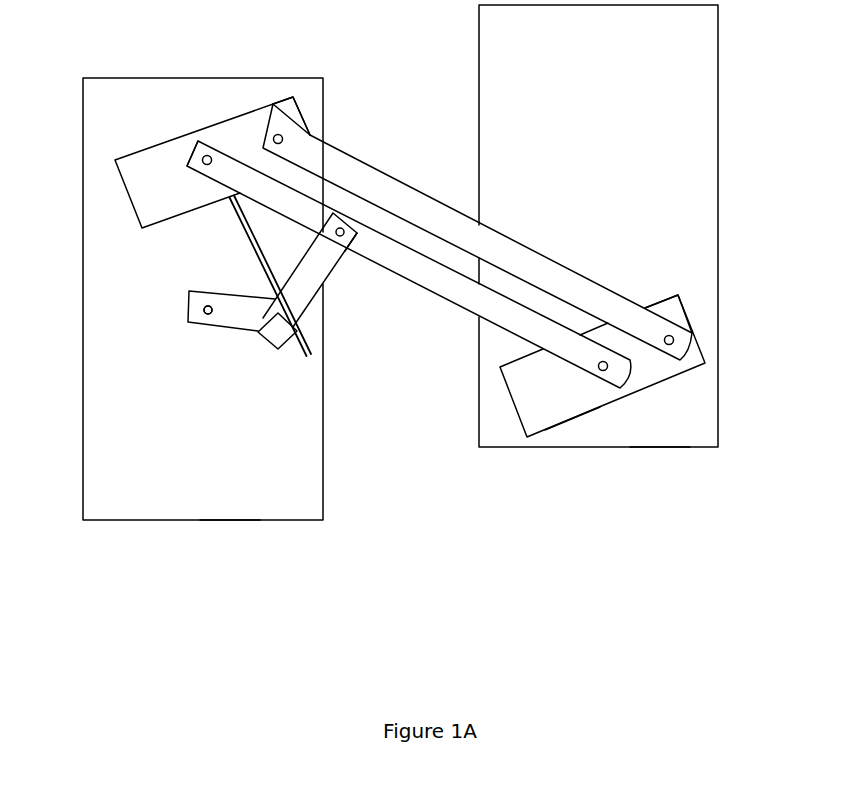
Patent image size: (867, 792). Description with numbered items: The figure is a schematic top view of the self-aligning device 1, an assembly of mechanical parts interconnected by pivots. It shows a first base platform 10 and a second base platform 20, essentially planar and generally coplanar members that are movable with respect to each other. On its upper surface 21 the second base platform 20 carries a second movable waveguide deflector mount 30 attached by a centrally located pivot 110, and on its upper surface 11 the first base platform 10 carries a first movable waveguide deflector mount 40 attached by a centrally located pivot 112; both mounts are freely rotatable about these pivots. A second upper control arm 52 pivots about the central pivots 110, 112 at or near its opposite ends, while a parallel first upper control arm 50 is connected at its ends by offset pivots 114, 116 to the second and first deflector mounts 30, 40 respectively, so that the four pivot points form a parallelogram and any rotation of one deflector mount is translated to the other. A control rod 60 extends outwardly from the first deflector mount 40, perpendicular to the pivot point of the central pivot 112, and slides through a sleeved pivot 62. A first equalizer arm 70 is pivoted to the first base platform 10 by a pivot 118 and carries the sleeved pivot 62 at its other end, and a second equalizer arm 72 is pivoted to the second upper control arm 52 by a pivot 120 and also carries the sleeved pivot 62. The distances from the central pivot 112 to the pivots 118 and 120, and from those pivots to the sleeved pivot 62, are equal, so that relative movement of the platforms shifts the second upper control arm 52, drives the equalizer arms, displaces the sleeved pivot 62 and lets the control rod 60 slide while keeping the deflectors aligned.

The self-aligning device 1 is at (793, 43).
The first base platform 10 is at (165, 521).
The upper surface 11 is at (230, 519).
The second base platform 20 is at (611, 448).
The upper surface 21 is at (656, 432).
The second movable waveguide deflector mount 30 is at (519, 417).
The first movable waveguide deflector mount 40 is at (129, 194).
The first upper control arm 50 is at (402, 183).
The second upper control arm 52 is at (452, 301).
The control rod 60 is at (302, 358).
The sleeved pivot 62 is at (262, 335).
The first equalizer arm 70 is at (236, 296).
The second equalizer arm 72 is at (322, 279).
The centrally located pivot 110 is at (572, 421).
The centrally located pivot 112 is at (195, 138).
The pivot 114 is at (690, 314).
The pivot 116 is at (273, 104).
The pivot 118 is at (205, 323).
The pivot 120 is at (353, 263).